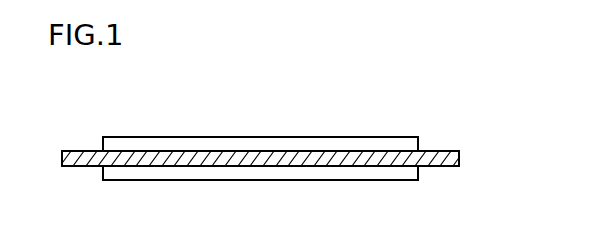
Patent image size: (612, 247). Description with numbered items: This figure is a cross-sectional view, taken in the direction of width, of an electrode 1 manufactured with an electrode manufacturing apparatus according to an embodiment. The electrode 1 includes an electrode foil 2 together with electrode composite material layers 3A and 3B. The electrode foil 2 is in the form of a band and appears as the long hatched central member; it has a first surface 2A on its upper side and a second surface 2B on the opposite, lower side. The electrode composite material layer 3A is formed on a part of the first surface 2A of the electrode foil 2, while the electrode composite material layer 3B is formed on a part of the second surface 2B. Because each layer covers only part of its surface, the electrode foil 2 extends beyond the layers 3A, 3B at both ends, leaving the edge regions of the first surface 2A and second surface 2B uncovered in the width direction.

The electrode 1 is at (318, 95).
The electrode foil 2 is at (443, 166).
The first surface 2A is at (81, 151).
The second surface 2B is at (80, 167).
The electrode composite material layer 3A is at (380, 148).
The electrode composite material layer 3B is at (380, 181).